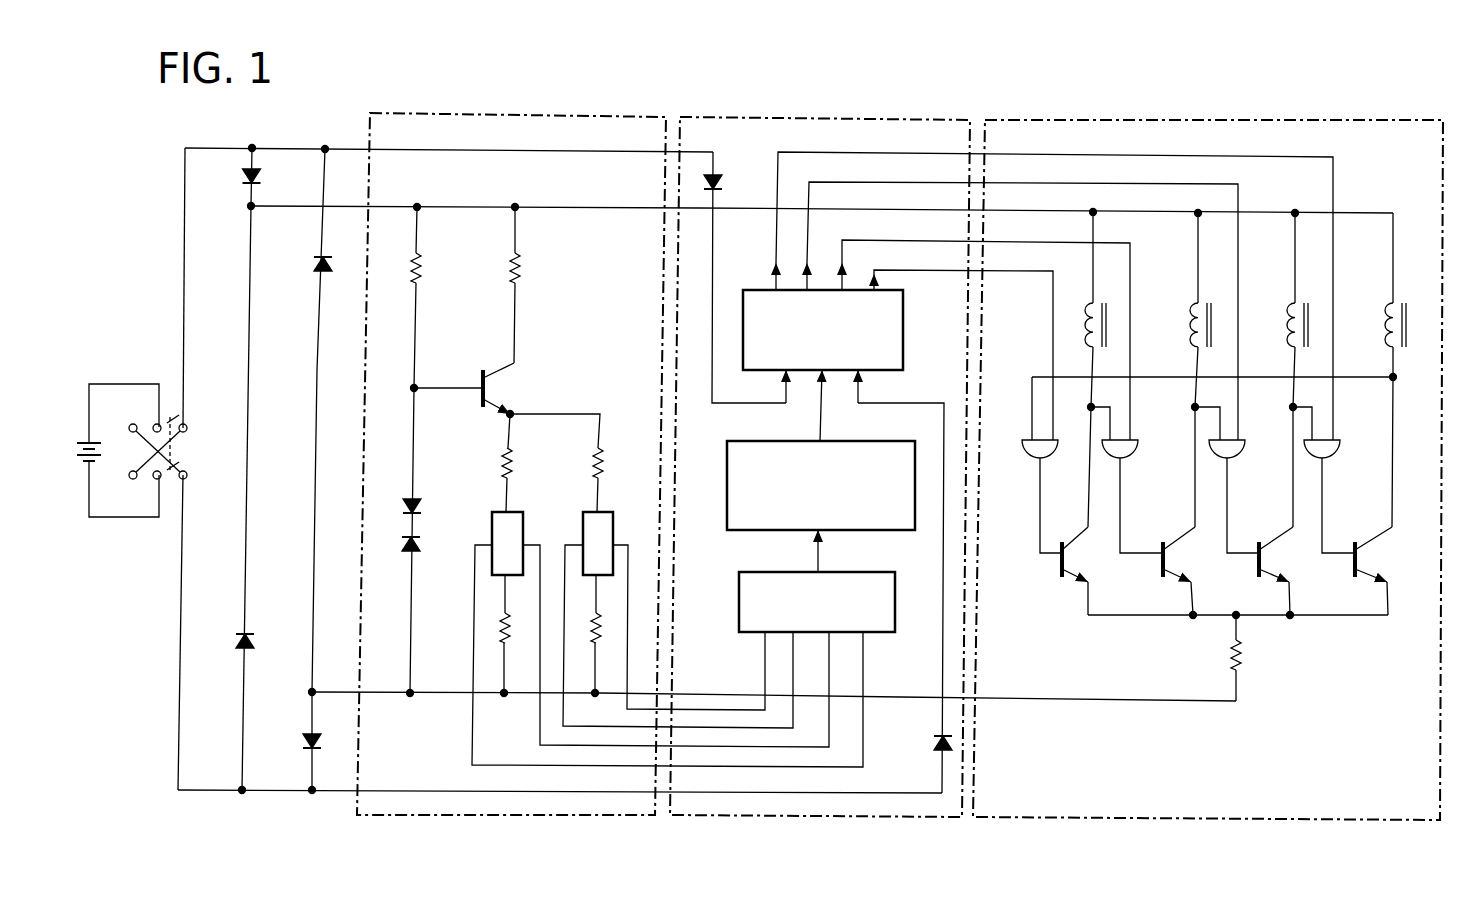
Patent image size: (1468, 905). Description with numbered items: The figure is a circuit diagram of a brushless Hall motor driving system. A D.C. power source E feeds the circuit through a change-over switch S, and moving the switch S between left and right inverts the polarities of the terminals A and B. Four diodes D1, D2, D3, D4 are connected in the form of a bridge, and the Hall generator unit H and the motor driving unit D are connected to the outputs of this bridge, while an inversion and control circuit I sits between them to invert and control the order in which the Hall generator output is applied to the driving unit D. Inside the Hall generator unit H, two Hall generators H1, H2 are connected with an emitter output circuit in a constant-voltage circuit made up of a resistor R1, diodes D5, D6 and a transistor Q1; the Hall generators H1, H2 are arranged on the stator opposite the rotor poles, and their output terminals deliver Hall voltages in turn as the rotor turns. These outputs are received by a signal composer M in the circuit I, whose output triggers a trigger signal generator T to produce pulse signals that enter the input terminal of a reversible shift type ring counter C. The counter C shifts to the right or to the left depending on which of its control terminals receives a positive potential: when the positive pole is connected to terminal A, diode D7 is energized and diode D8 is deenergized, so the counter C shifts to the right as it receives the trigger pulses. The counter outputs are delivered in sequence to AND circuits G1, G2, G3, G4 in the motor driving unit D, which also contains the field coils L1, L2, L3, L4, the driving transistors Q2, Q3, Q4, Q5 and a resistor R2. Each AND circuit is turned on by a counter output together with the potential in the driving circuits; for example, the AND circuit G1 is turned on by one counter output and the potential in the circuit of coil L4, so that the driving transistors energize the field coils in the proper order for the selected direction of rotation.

The D.C. power source E is at (98, 438).
The change-over switch S is at (155, 479).
The terminal A is at (193, 417).
The terminal B is at (191, 486).
The diode D1 is at (262, 178).
The diode D2 is at (258, 640).
The diode D3 is at (312, 265).
The diode D4 is at (302, 742).
The diode D5 is at (421, 507).
The diode D6 is at (420, 543).
The diode D7 is at (722, 178).
The diode D8 is at (932, 742).
The resistor R1 is at (423, 265).
The resistor R2 is at (1243, 660).
The transistor Q1 is at (495, 386).
The driving transistor Q2 is at (1082, 562).
The driving transistor Q3 is at (1184, 562).
The driving transistor Q4 is at (1280, 562).
The driving transistor Q5 is at (1372, 560).
The Hall generator unit H is at (563, 118).
The Hall generator H1 is at (522, 507).
The Hall generator H2 is at (606, 510).
The inversion and control circuit I is at (846, 118).
The reversible shift type ring counter C is at (905, 320).
The trigger signal generator T is at (843, 439).
The signal composer M is at (896, 580).
The motor driving unit D is at (1197, 120).
The field coil L1 is at (1104, 298).
The field coil L2 is at (1209, 298).
The field coil L3 is at (1306, 298).
The field coil L4 is at (1404, 298).
The AND circuit G1 is at (1058, 438).
The AND circuit G2 is at (1138, 438).
The AND circuit G3 is at (1245, 438).
The AND circuit G4 is at (1340, 438).